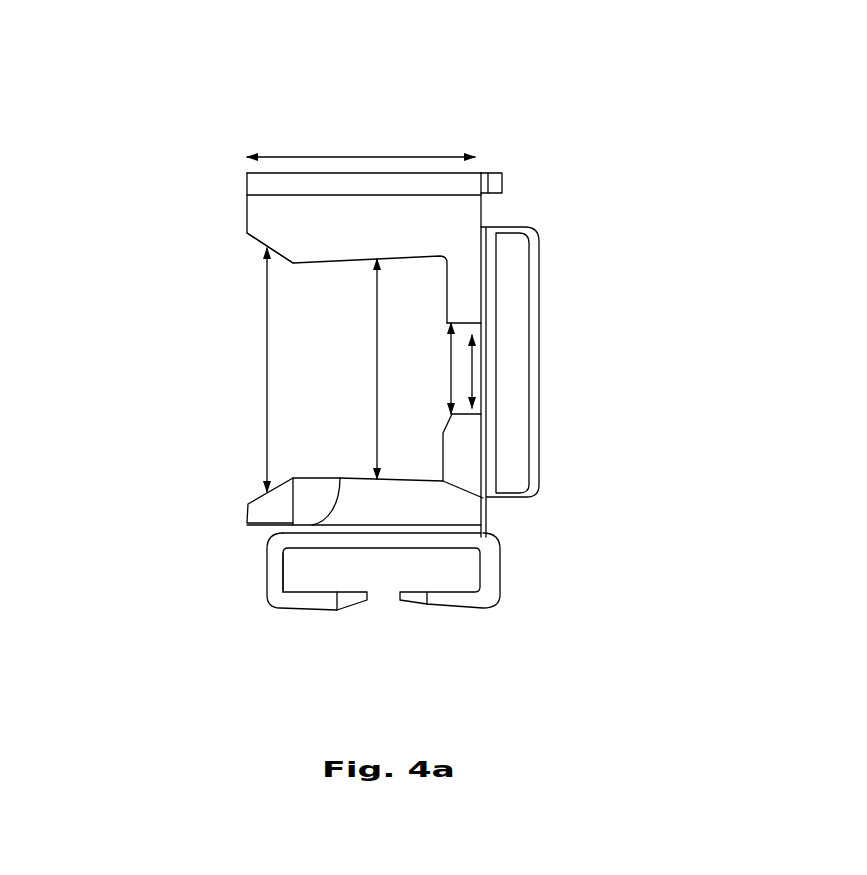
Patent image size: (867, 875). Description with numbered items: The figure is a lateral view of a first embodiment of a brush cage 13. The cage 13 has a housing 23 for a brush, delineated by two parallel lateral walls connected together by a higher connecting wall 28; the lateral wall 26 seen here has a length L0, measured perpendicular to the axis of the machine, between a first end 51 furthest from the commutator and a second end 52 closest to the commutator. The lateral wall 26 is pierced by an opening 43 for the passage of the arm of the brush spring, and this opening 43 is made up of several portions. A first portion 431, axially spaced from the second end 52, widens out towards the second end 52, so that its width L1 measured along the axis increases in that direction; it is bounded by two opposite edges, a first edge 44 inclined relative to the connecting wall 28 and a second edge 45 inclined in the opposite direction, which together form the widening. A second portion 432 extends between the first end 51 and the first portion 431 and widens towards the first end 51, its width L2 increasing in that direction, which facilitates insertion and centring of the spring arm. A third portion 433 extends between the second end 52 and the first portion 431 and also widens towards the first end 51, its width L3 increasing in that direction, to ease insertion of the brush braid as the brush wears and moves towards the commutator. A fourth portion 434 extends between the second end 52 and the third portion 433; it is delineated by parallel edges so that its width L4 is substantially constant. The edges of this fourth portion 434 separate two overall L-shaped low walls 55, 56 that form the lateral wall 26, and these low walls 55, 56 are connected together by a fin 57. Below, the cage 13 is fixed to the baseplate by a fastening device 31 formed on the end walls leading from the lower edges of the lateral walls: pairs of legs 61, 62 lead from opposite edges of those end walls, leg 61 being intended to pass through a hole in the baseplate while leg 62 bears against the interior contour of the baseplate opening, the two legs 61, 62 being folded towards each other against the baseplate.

The brush cage 13 is at (186, 117).
The low wall 55 is at (323, 220).
The first edge 44 is at (400, 256).
The higher connecting wall 28 is at (437, 190).
The housing 23 is at (457, 205).
The second end 52 is at (489, 201).
The first end 51 is at (245, 182).
The lateral wall 26 is at (262, 220).
The opening 43 is at (236, 278).
The third portion 433 is at (447, 315).
The fourth portion 434 is at (484, 352).
The fin 57 is at (523, 440).
The first portion 431 is at (421, 471).
The second portion 432 is at (257, 503).
The low wall 56 is at (382, 507).
The second edge 45 is at (293, 530).
The fastening device 31 is at (443, 620).
The leg 61 is at (297, 602).
The leg 62 is at (470, 598).
The length of lateral wall L0 is at (341, 157).
The width of first portion L1 is at (376, 382).
The width of second portion L2 is at (266, 373).
The width of third portion L3 is at (452, 377).
The width of fourth portion L4 is at (474, 378).